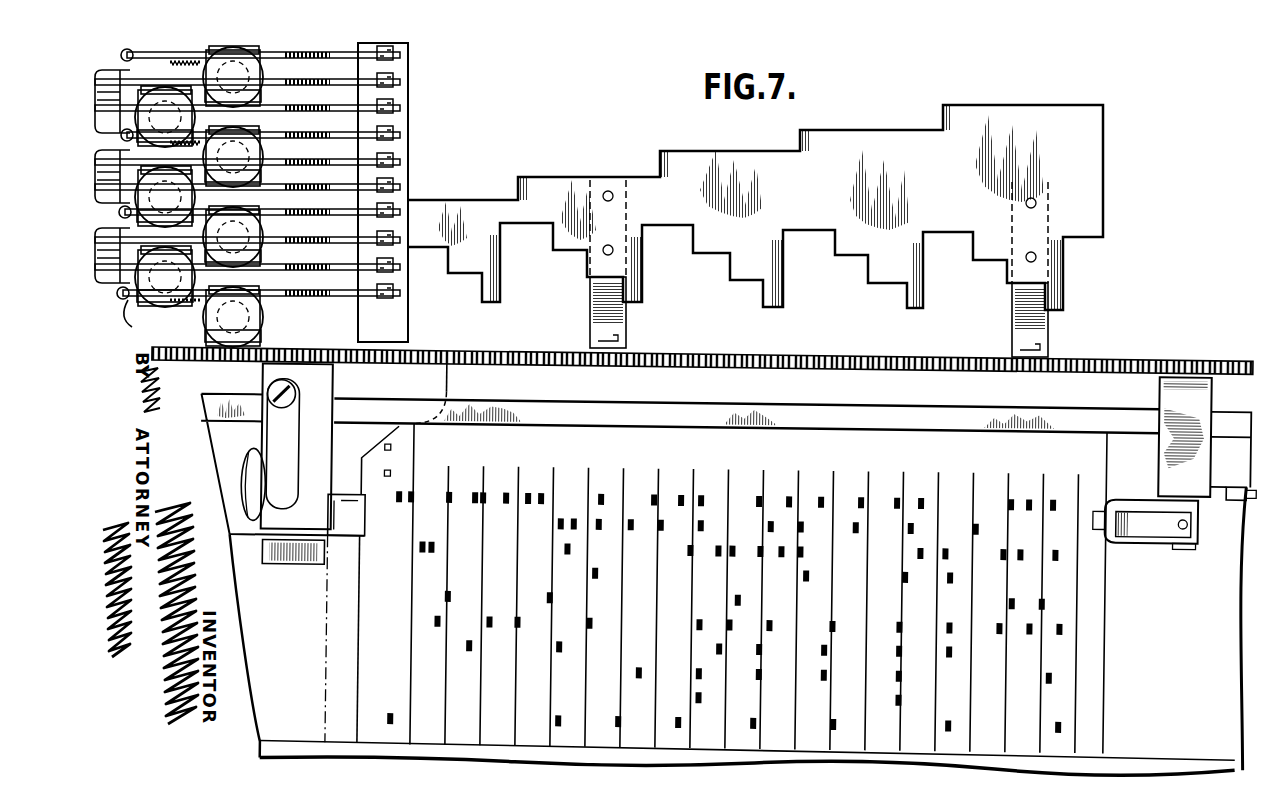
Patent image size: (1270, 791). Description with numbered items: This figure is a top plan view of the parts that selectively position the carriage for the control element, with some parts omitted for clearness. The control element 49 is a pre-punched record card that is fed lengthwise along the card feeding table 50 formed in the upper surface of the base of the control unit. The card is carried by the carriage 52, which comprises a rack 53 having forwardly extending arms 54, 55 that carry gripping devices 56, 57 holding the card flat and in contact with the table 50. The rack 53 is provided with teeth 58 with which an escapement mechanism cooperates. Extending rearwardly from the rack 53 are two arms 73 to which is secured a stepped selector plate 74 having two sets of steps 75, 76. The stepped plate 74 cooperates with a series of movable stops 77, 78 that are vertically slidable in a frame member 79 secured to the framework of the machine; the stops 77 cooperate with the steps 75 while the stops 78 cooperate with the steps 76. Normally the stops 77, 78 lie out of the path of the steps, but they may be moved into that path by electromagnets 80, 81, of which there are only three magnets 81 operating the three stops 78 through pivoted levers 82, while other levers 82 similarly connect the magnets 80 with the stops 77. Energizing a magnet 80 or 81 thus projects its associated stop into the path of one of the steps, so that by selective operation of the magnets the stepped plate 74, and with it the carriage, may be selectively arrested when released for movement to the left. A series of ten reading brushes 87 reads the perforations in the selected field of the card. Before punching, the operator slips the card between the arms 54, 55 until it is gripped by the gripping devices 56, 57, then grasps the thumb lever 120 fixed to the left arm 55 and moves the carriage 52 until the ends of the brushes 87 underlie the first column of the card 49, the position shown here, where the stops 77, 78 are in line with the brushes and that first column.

The control element 49 is at (1095, 585).
The card feeding table 50 is at (737, 625).
The carriage 52 is at (285, 534).
The rack 53 is at (1120, 348).
The forwardly extending arm 54 is at (1200, 396).
The forwardly extending arm 55 is at (322, 435).
The gripping device 56 is at (362, 544).
The gripping device 57 is at (1143, 518).
The teeth 58 is at (739, 361).
The arm 73 is at (590, 298).
The stepped selector plate 74 is at (541, 181).
The steps 75 is at (662, 163).
The steps 76 is at (472, 285).
The movable stops 77 is at (396, 135).
The movable stops 78 is at (397, 293).
The frame member 79 is at (368, 323).
The electromagnet 80 is at (234, 47).
The electromagnet 81 is at (175, 312).
The pivoted lever 82 is at (298, 106).
The reading brush 87 is at (386, 469).
The thumb lever 120 is at (268, 435).